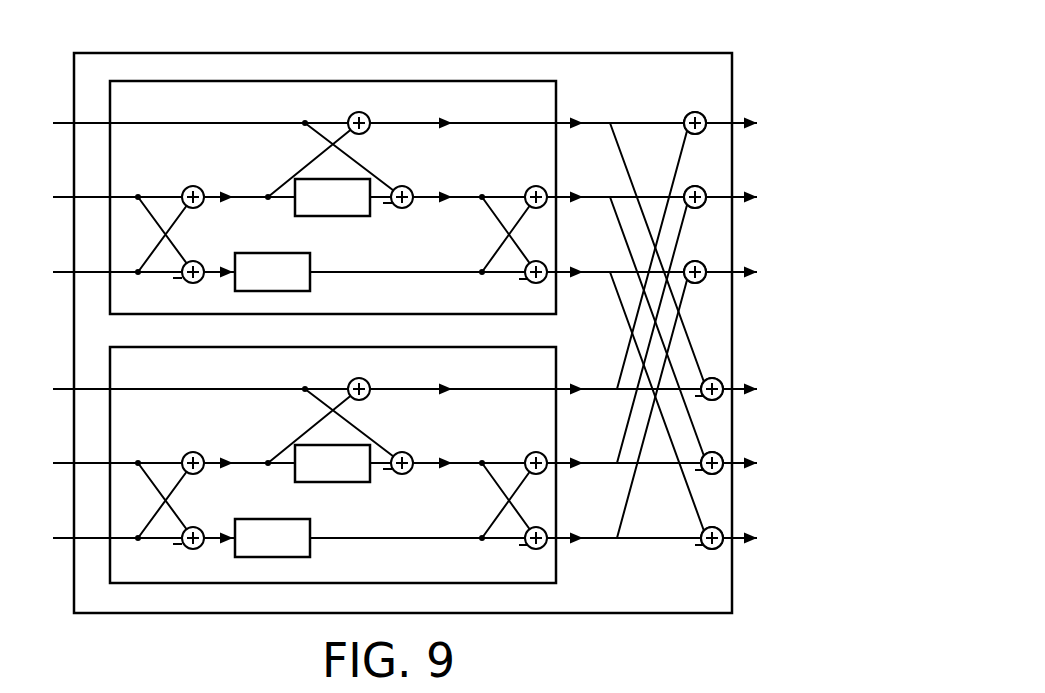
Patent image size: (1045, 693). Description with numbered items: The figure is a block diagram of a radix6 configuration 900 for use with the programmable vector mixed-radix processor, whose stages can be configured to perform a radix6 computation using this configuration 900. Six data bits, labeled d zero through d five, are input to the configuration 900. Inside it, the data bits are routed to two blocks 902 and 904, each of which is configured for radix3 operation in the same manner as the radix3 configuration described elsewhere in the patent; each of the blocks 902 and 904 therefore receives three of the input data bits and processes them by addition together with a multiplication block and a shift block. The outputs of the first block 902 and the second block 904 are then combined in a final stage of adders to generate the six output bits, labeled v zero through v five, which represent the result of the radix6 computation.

The radix6 configuration 900 is at (683, 53).
The radix3 block 902 is at (556, 92).
The radix3 block 904 is at (556, 572).